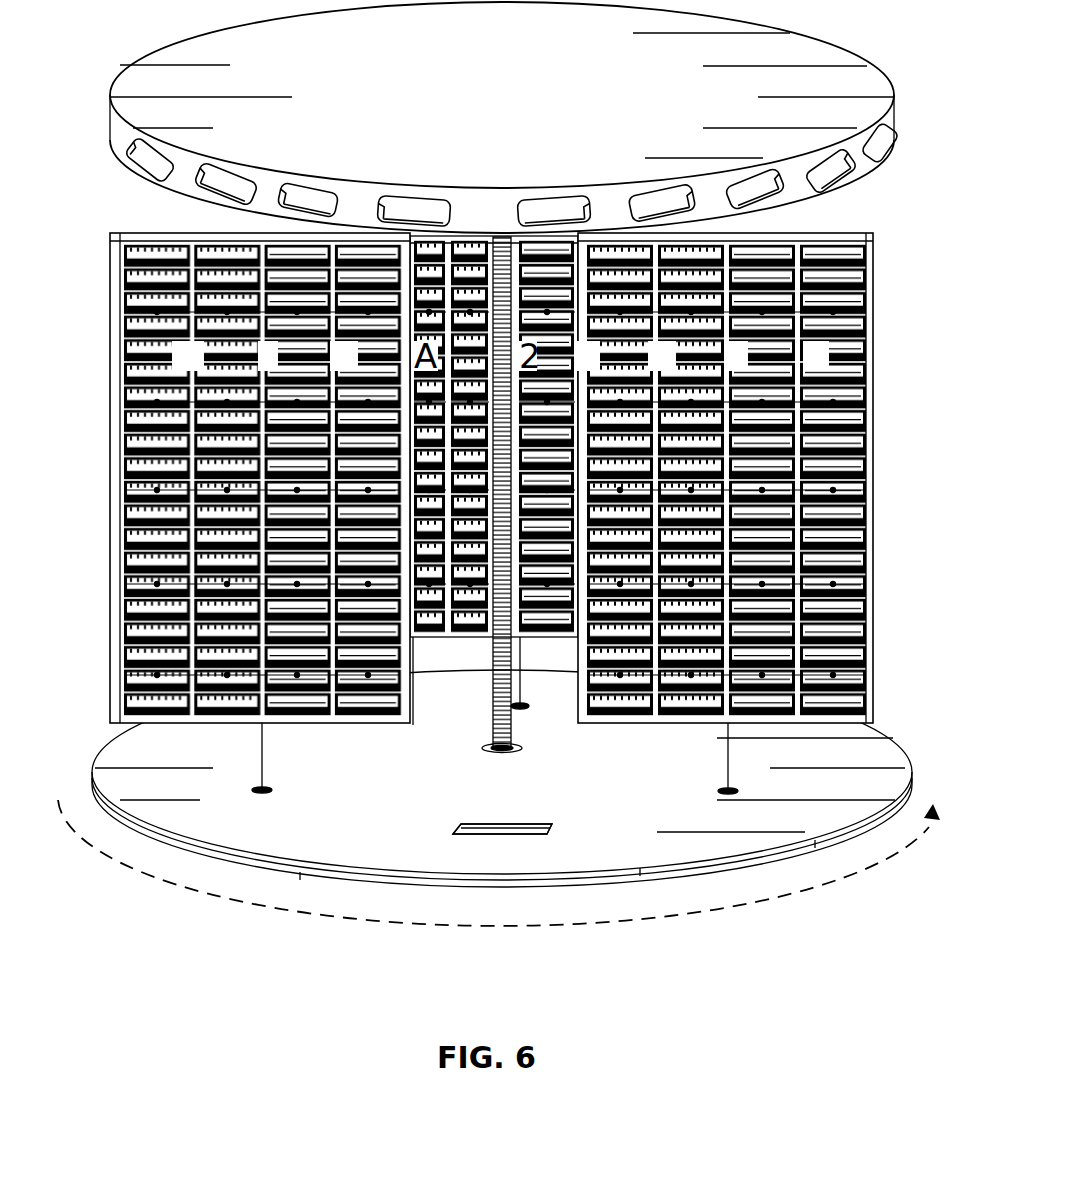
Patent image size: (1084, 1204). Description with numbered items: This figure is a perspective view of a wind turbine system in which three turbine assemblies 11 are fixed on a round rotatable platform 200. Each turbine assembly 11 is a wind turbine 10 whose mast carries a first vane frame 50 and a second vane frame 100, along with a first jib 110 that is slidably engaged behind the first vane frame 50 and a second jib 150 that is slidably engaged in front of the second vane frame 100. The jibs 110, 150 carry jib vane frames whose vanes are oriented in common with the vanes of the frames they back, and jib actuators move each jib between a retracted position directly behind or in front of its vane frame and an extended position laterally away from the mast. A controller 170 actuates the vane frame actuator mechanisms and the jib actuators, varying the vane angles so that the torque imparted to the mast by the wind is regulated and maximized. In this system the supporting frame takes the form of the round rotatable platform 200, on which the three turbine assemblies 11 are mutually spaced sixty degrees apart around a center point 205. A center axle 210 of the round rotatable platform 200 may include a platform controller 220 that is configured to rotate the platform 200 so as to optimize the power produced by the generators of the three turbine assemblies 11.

The wind turbine 10 is at (231, 502).
The turbine assembly 11 is at (880, 351).
The first vane frame 50 is at (240, 688).
The second vane frame 100 is at (280, 685).
The first jib 110 is at (137, 458).
The second jib 150 is at (355, 685).
The controller 170 is at (490, 836).
The round rotatable platform 200 is at (865, 760).
The center point 205 is at (520, 752).
The center axle 210 is at (510, 720).
The platform controller 220 is at (502, 829).